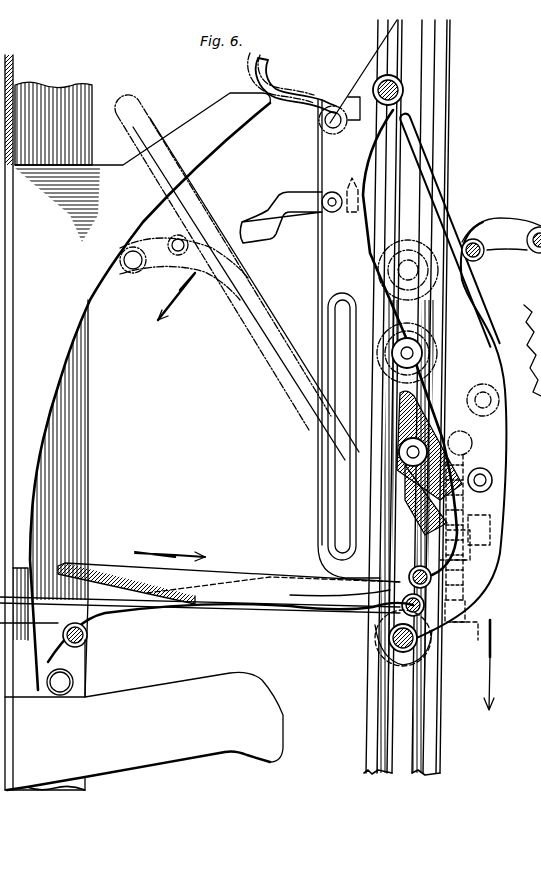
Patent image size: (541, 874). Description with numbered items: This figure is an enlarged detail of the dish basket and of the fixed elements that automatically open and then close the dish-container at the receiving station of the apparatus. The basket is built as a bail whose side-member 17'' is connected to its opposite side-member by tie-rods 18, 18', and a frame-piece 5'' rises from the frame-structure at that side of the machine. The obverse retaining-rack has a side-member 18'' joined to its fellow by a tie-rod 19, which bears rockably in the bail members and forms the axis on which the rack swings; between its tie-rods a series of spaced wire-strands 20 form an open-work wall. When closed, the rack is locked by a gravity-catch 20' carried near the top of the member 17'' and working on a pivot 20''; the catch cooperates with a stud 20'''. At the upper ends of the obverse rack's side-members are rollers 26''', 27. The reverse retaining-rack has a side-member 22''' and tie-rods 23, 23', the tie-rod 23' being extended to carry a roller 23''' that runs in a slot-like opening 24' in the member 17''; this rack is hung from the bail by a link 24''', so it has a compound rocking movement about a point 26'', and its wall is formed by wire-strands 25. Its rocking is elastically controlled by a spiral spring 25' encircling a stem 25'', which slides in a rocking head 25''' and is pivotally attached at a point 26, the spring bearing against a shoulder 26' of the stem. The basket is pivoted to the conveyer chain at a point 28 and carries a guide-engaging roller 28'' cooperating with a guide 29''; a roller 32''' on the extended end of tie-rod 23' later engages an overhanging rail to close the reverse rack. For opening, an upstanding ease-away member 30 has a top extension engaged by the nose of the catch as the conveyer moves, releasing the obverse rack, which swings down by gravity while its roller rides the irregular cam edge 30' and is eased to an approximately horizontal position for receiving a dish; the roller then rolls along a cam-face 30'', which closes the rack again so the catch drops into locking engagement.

The frame-piece 5'' is at (54, 116).
The ease-away member 30 is at (142, 391).
The cam edge 30' is at (66, 498).
The cam-face 30'' is at (144, 715).
The roller 26''' is at (237, 277).
The gravity-catch 20' is at (281, 211).
The pivot 20'' is at (336, 216).
The stud 20''' is at (343, 186).
The side-member 17'' is at (349, 339).
The slot-like opening 24' is at (318, 426).
The tie-rod 18 is at (376, 85).
The guide 29'' is at (449, 230).
The pivot point 26 is at (447, 342).
The pivotal attachment point 28 is at (401, 311).
The wire-strands 25 is at (458, 433).
The side-member 22''' is at (501, 256).
The tie-rod 23 is at (487, 257).
The link 24''' is at (429, 463).
The point of compound rocking movement 26'' is at (392, 451).
The shoulder 26' is at (490, 438).
The roller 32''' is at (467, 550).
The spiral spring 25' is at (472, 543).
The stem 25'' is at (468, 551).
The rocking head 25''' is at (480, 622).
The tie-rod 18' is at (449, 577).
The tie-rod 23' is at (445, 601).
The roller 23''' is at (230, 626).
The guide-engaging roller 28'' is at (377, 649).
The wire-strands 20 is at (229, 595).
The side-member 18'' is at (200, 611).
The tie-rod 19 is at (86, 641).
The roller 27 is at (73, 683).